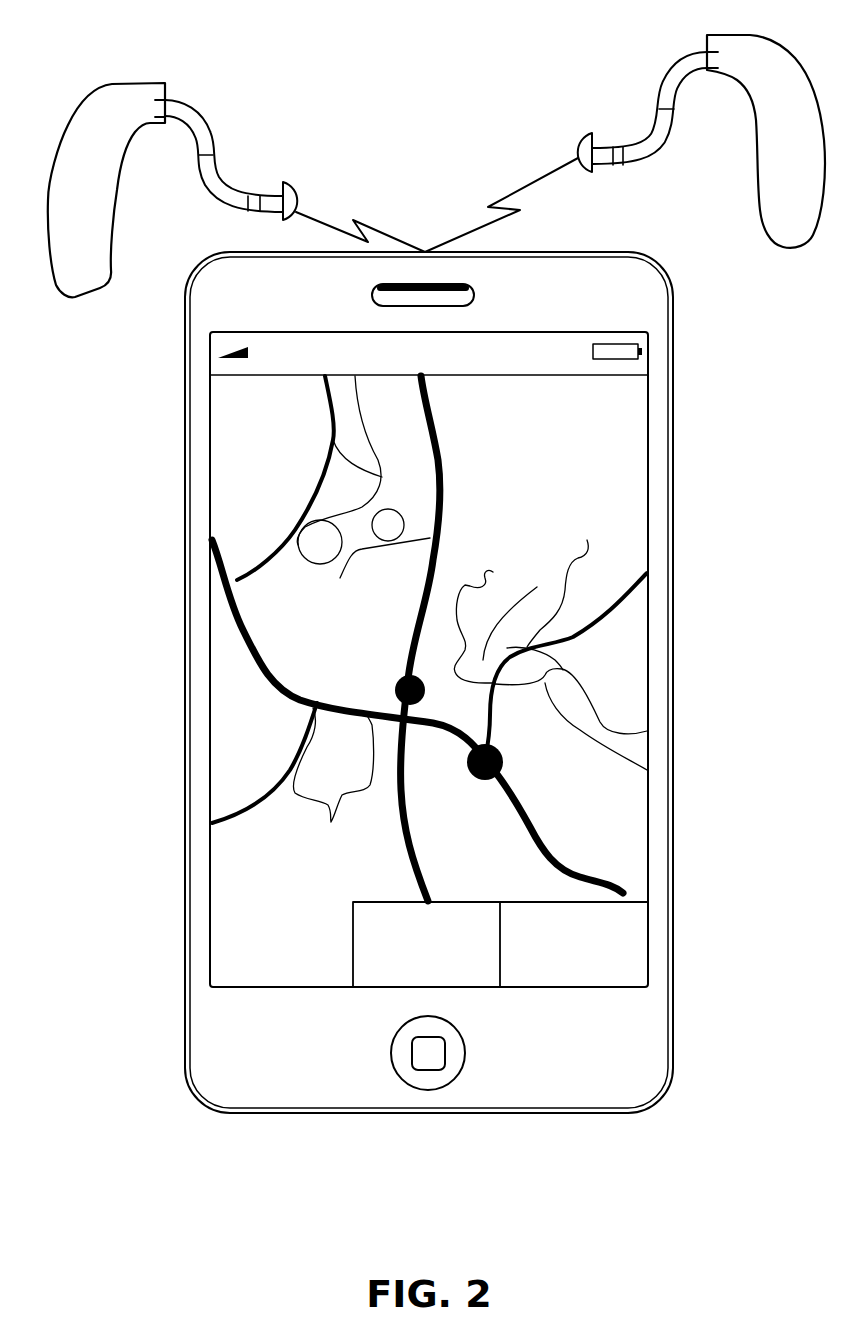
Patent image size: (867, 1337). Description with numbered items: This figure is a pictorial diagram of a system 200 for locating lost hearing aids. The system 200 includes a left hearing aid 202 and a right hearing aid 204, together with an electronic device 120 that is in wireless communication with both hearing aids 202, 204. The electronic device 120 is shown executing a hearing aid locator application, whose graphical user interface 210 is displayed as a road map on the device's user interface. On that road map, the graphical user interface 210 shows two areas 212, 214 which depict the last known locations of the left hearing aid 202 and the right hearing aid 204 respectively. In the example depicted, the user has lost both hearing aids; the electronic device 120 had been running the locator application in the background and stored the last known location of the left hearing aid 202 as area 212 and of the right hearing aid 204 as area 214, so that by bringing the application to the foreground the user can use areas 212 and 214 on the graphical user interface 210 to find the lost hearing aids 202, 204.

The system 200 is at (100, 22).
The electronic device 120 is at (233, 250).
The left hearing aid 202 is at (294, 184).
The right hearing aid 204 is at (580, 143).
The graphical user interface 210 is at (260, 450).
The area 212 is at (400, 688).
The area 214 is at (503, 767).